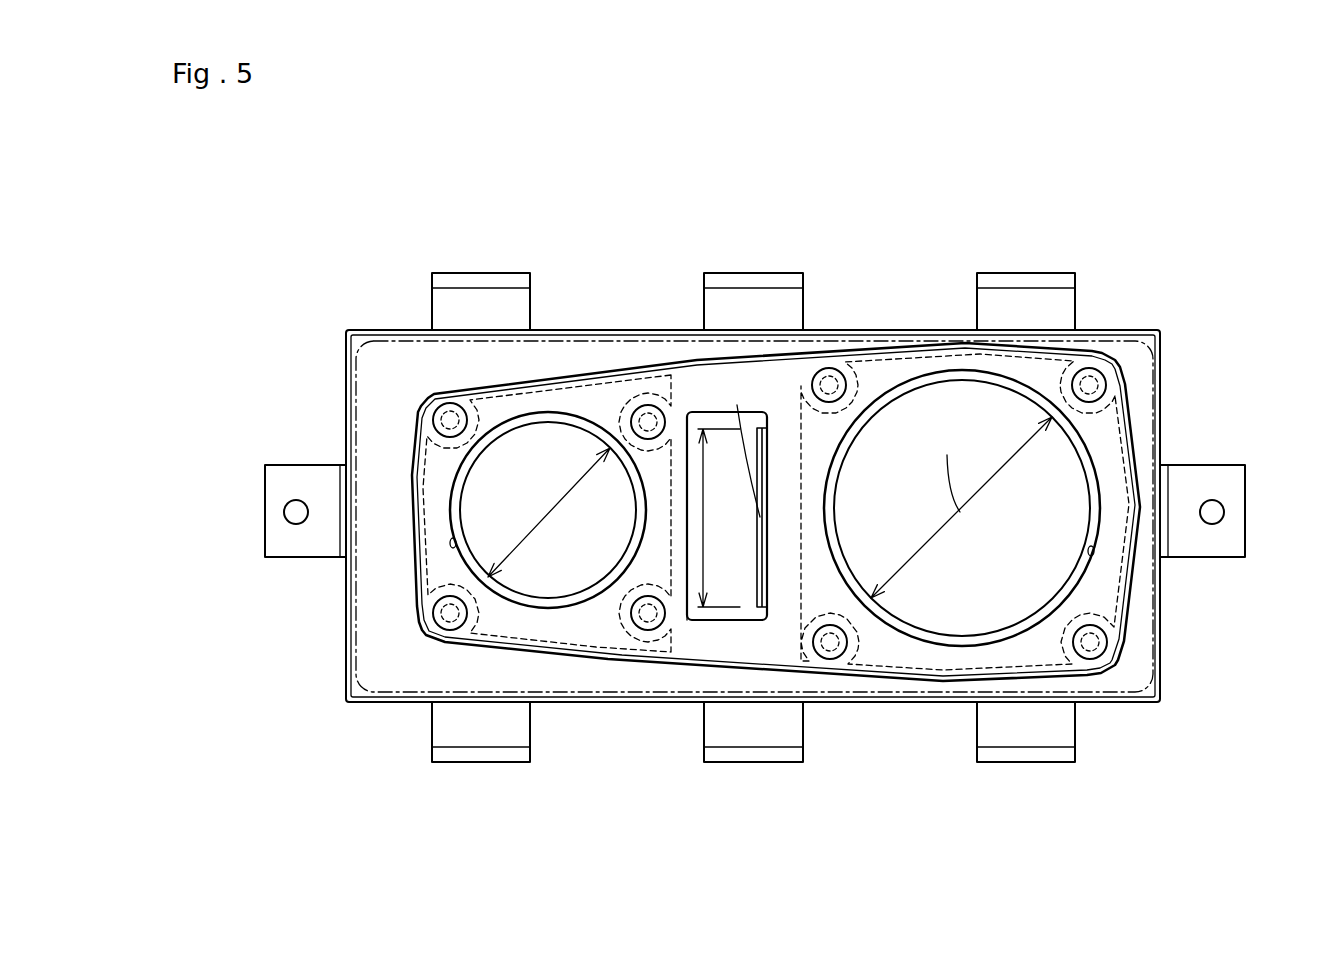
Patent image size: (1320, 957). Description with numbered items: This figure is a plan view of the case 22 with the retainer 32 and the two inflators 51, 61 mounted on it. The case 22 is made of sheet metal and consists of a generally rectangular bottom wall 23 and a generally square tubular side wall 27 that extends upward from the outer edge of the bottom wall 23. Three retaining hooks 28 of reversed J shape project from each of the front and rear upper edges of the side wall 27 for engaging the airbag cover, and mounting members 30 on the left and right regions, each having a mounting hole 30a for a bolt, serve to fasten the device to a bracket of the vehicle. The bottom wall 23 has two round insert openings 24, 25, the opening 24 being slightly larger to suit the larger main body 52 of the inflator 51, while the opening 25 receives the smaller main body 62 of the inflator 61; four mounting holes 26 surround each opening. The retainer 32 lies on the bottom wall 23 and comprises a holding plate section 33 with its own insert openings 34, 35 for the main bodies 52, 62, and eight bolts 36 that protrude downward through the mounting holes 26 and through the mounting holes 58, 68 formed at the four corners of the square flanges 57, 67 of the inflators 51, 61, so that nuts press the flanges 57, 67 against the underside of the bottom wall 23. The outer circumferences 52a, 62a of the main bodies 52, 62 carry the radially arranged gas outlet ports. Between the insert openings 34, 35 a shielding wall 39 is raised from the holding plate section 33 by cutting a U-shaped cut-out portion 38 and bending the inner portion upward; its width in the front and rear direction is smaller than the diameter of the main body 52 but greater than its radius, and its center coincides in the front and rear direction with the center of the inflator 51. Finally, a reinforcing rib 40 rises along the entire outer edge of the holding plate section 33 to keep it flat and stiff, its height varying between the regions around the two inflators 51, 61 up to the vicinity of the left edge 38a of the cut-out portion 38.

The case 22 is at (228, 193).
The bottom wall 23 is at (368, 398).
The side wall 27 is at (369, 330).
The retaining hook 28 is at (1020, 273).
The mounting member 30 is at (303, 480).
The mounting hole 30a is at (285, 502).
The retainer 32 is at (669, 350).
The holding plate section 33 is at (758, 377).
The shielding wall 39 is at (762, 453).
The reinforcing rib 40 is at (875, 347).
The mounting hole 26 is at (798, 521).
The bolt 36 is at (798, 521).
The mounting hole 68 is at (448, 412).
The mounting hole 58 is at (1092, 378).
The flange 57 is at (1112, 622).
The flange 67 is at (455, 547).
The inflator 61 is at (437, 615).
The main body 62 is at (552, 625).
The outer circumference 62a is at (503, 583).
The insert opening 25 is at (342, 573).
The insert opening 35 is at (452, 548).
The inflator 51 is at (1051, 602).
The main body 52 is at (962, 661).
The outer circumference 52a is at (918, 636).
The insert opening 24 is at (1183, 580).
The insert opening 34 is at (1092, 556).
The cut-out portion 38 is at (752, 620).
The left edge 38a is at (692, 620).